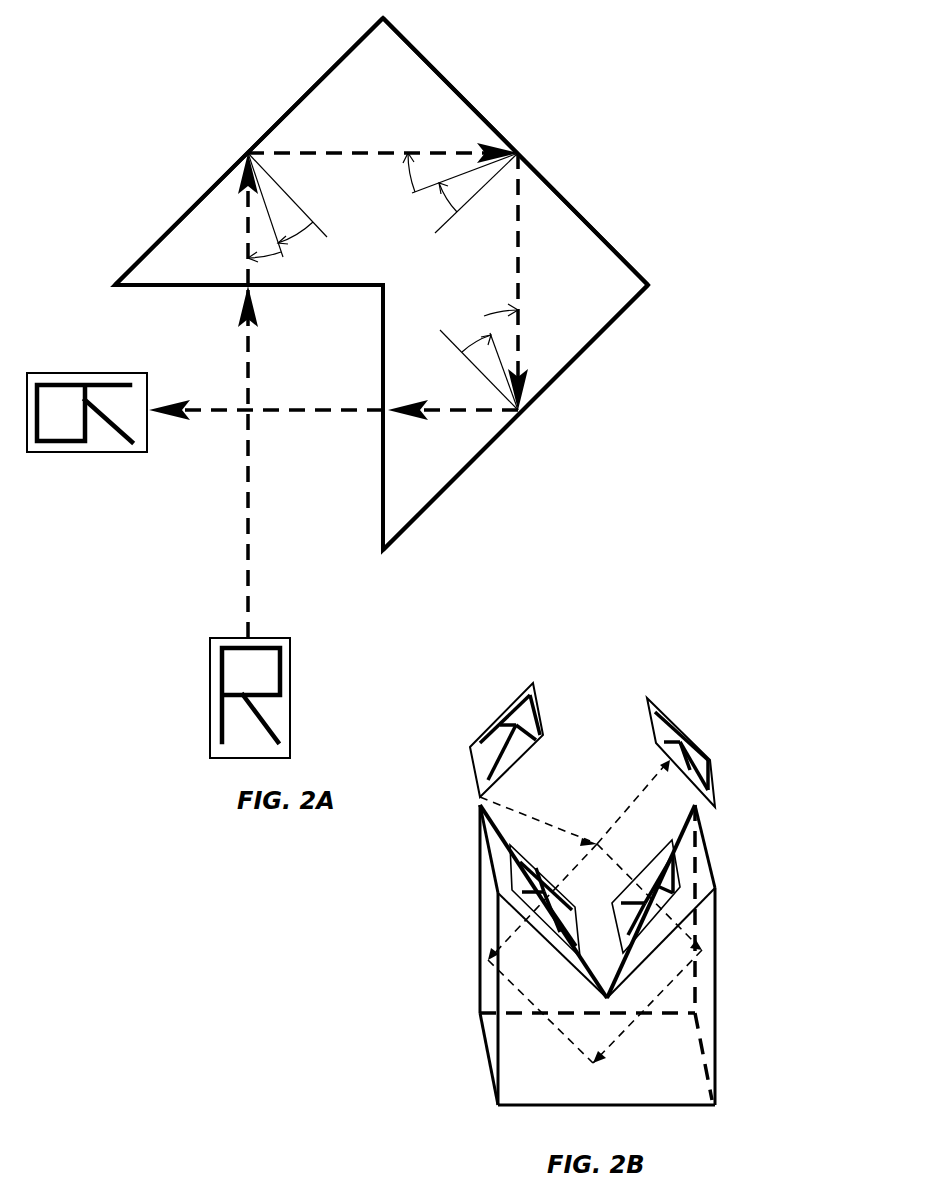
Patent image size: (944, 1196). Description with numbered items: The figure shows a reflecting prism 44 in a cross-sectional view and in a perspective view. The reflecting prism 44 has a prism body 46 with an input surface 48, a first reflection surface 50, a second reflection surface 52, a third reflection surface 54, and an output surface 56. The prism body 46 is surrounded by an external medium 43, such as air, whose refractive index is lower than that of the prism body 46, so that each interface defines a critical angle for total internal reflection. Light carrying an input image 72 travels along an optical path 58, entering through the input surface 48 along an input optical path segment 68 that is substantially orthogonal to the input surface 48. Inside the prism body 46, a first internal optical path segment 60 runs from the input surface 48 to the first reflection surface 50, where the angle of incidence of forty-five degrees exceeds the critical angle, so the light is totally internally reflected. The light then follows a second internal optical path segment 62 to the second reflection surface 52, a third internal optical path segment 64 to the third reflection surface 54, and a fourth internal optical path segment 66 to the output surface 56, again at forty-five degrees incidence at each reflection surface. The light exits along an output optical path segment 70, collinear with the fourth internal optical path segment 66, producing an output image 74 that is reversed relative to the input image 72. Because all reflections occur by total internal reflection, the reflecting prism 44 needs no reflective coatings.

In FIG. 2A, the external medium 43 is at (657, 197).
In FIG. 2A, the reflecting prism 44 is at (610, 66).
In FIG. 2B, the reflecting prism 44 is at (758, 887).
In FIG. 2A, the prism body 46 is at (402, 78).
In FIG. 2A, the input surface 48 is at (165, 288).
In FIG. 2A, the first reflection surface 50 is at (284, 112).
In FIG. 2A, the second reflection surface 52 is at (452, 86).
In FIG. 2A, the third reflection surface 54 is at (553, 386).
In FIG. 2A, the output surface 56 is at (381, 500).
In FIG. 2A, the optical path 58 is at (212, 524).
In FIG. 2B, the optical path 58 is at (562, 803).
In FIG. 2A, the first internal optical path segment 60 is at (246, 246).
In FIG. 2A, the second internal optical path segment 62 is at (341, 150).
In FIG. 2A, the third internal optical path segment 64 is at (521, 283).
In FIG. 2A, the fourth internal optical path segment 66 is at (445, 412).
In FIG. 2A, the input optical path segment 68 is at (251, 602).
In FIG. 2A, the output optical path segment 70 is at (337, 412).
In FIG. 2A, the input image 72 is at (210, 715).
In FIG. 2B, the input image 72 is at (498, 722).
In FIG. 2A, the output image 74 is at (93, 453).
In FIG. 2B, the output image 74 is at (680, 732).